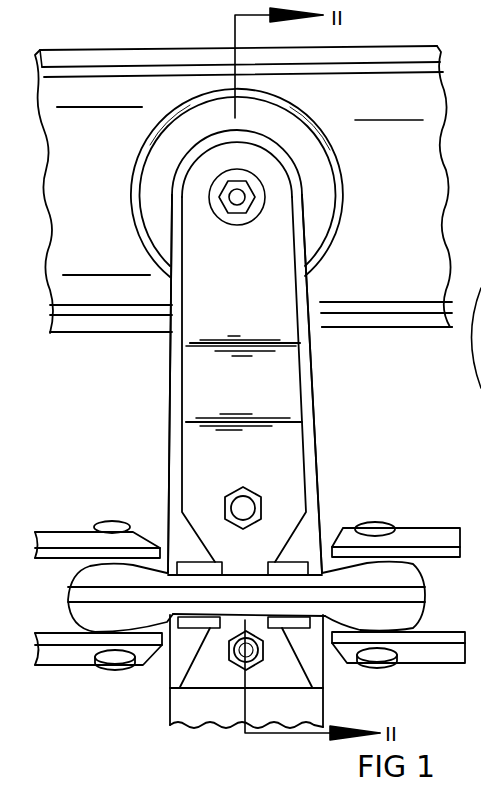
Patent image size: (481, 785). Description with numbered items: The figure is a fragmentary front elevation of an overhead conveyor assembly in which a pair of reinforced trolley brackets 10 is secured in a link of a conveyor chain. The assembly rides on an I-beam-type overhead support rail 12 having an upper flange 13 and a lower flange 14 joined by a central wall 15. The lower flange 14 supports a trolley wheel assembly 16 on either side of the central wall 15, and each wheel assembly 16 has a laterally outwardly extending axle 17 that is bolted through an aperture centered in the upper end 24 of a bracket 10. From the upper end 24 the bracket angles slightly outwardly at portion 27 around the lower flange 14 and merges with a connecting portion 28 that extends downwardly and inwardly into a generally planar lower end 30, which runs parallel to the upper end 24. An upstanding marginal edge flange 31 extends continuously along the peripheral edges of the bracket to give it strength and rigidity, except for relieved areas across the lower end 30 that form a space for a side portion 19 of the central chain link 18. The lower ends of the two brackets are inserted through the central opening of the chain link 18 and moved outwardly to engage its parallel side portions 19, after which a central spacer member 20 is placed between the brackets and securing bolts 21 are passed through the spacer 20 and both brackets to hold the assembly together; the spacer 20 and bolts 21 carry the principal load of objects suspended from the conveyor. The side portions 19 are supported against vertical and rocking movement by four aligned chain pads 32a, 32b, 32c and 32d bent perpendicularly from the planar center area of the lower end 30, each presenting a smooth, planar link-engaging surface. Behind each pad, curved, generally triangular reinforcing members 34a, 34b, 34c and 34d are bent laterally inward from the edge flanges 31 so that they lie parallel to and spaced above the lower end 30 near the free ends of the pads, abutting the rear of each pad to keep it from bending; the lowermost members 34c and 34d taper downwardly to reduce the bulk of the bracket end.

The trolley bracket 10 is at (160, 405).
The overhead support rail 12 is at (380, 43).
The upper flange 13 is at (422, 52).
The lower flange 14 is at (362, 320).
The central wall 15 is at (393, 216).
The trolley wheel assembly 16 is at (308, 122).
The axle 17 is at (237, 199).
The central chain link 18 is at (436, 572).
The side portions 19 is at (330, 580).
The spacer member 20 is at (182, 723).
The securing bolt 21 is at (238, 506).
The upper end 24 is at (272, 182).
The outwardly angled portion 27 is at (277, 292).
The connecting portion 28 is at (240, 390).
The lower end 30 is at (215, 508).
The marginal edge flange 31 is at (173, 363).
The chain pad 32a is at (275, 565).
The chain pad 32b is at (215, 567).
The chain pad 32c is at (208, 623).
The chain pad 32d is at (287, 623).
The reinforcing member 34a is at (317, 557).
The reinforcing member 34b is at (202, 557).
The reinforcing member 34c is at (182, 670).
The reinforcing member 34d is at (302, 647).